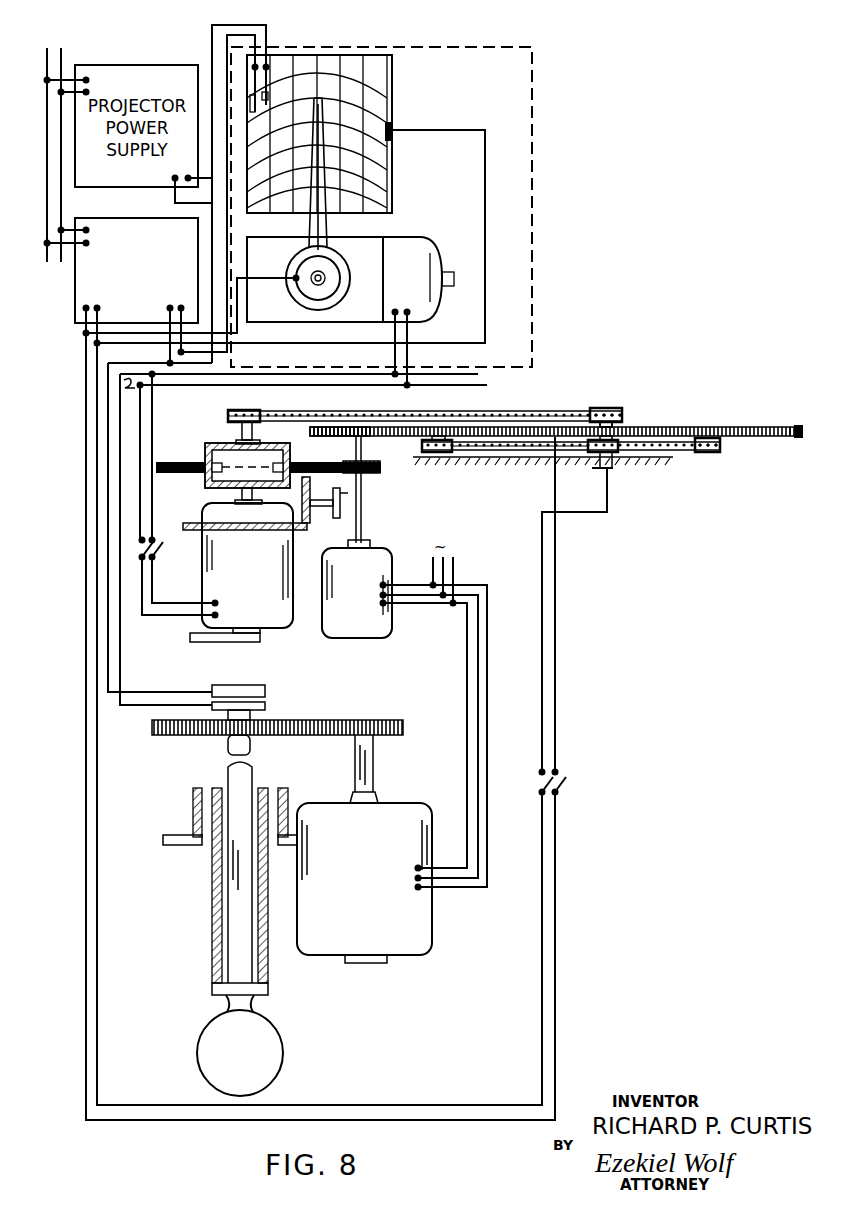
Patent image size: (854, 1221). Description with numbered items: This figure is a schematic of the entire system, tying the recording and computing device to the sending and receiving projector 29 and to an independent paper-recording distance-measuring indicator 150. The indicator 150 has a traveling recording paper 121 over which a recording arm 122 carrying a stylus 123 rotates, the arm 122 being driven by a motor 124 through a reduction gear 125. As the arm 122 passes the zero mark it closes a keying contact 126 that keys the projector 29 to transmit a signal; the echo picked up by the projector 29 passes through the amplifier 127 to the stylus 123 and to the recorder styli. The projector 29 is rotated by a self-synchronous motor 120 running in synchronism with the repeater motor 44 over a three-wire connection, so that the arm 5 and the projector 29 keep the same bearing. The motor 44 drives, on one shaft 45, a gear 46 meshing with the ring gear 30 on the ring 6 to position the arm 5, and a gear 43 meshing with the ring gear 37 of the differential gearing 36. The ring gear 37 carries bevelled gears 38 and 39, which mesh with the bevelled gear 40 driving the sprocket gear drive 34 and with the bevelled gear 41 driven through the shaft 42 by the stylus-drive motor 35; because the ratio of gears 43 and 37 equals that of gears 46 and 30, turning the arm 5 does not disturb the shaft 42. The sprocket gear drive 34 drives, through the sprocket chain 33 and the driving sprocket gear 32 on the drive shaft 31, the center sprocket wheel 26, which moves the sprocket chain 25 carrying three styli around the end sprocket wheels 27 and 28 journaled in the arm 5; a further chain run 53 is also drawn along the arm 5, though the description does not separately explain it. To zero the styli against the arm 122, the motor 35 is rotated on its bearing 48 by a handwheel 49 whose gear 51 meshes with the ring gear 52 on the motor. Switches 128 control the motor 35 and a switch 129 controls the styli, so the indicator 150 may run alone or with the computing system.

The bridge arm 5 is at (720, 427).
The ring 6 is at (773, 432).
The sprocket chain 25 is at (537, 447).
The center sprocket wheel 26 is at (605, 460).
The end sprocket wheel 27 is at (705, 450).
The end sprocket wheel 28 is at (433, 453).
The projector 29 is at (270, 1048).
The ring gear 30 is at (798, 437).
The drive shaft 31 is at (620, 424).
The driving sprocket gear 32 is at (603, 407).
The sprocket chain 33 is at (540, 410).
The sprocket gear drive 34 is at (252, 410).
The motor 35 is at (278, 625).
The differential gearing 36 is at (232, 455).
The ring gear 37 is at (328, 466).
The bevelled gear 38 is at (290, 420).
The bevelled gear 39 is at (208, 458).
The bevelled gear 40 is at (260, 443).
The bevelled gear 41 is at (217, 488).
The shaft 42 is at (262, 498).
The gear 43 is at (372, 470).
The motor 44 is at (380, 618).
The shaft 45 is at (363, 448).
The gear 46 is at (347, 428).
The bearing 48 is at (247, 642).
The handwheel 49 is at (335, 505).
The gear 51 is at (310, 522).
The ring gear 52 is at (306, 531).
The belt run 53 is at (528, 437).
The self-synchronous motor 120 is at (405, 923).
The recording paper 121 is at (243, 133).
The recording arm 122 is at (480, 128).
The stylus 123 is at (322, 115).
The motor 124 is at (400, 248).
The reduction gear 125 is at (372, 308).
The keying contact 126 is at (322, 75).
The amplifier 127 is at (90, 292).
The switches 128 is at (154, 553).
The switch 129 is at (567, 781).
The distance-measuring indicator 150 is at (513, 243).